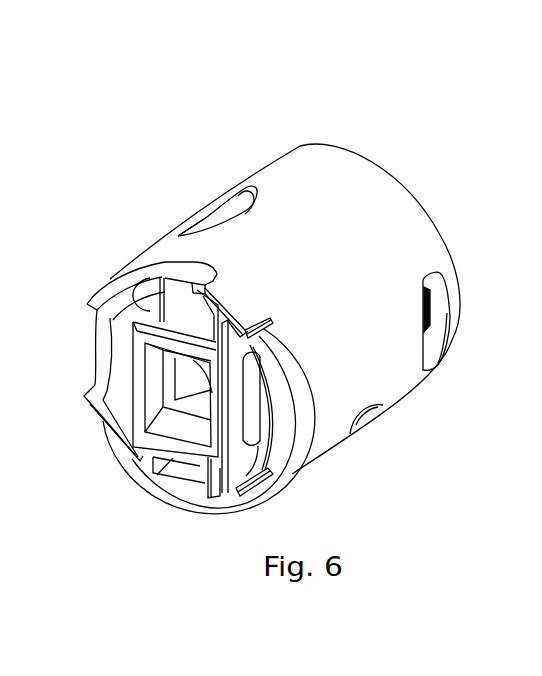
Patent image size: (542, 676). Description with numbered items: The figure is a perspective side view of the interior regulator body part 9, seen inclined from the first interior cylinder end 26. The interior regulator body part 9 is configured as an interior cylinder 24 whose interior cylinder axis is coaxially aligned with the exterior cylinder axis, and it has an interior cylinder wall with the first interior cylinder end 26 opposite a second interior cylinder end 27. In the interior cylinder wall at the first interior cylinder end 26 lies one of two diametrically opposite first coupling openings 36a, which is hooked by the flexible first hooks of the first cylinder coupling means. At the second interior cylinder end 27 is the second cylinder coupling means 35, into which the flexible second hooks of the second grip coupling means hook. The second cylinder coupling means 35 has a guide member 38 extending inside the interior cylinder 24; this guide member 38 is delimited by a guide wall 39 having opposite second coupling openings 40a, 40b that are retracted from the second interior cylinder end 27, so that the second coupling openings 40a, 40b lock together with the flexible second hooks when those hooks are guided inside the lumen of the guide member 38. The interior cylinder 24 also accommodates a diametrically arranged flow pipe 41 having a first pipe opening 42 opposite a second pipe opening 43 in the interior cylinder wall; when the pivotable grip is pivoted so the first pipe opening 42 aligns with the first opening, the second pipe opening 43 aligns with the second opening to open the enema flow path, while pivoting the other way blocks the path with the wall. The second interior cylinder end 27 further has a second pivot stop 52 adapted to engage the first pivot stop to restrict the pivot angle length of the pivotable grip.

The interior regulator body part 9 is at (379, 121).
The interior cylinder 24 is at (298, 172).
The first interior cylinder end 26 is at (416, 196).
The second interior cylinder end 27 is at (167, 497).
The second cylinder coupling means 35 is at (273, 472).
The first coupling opening 36a is at (443, 320).
The guide member 38 is at (140, 426).
The guide wall 39 is at (205, 471).
The second coupling opening 40a is at (250, 400).
The second coupling opening 40b is at (167, 360).
The flow pipe 41 is at (240, 200).
The first pipe opening 42 is at (213, 218).
The second pipe opening 43 is at (368, 418).
The second pivot stop 52 is at (238, 306).